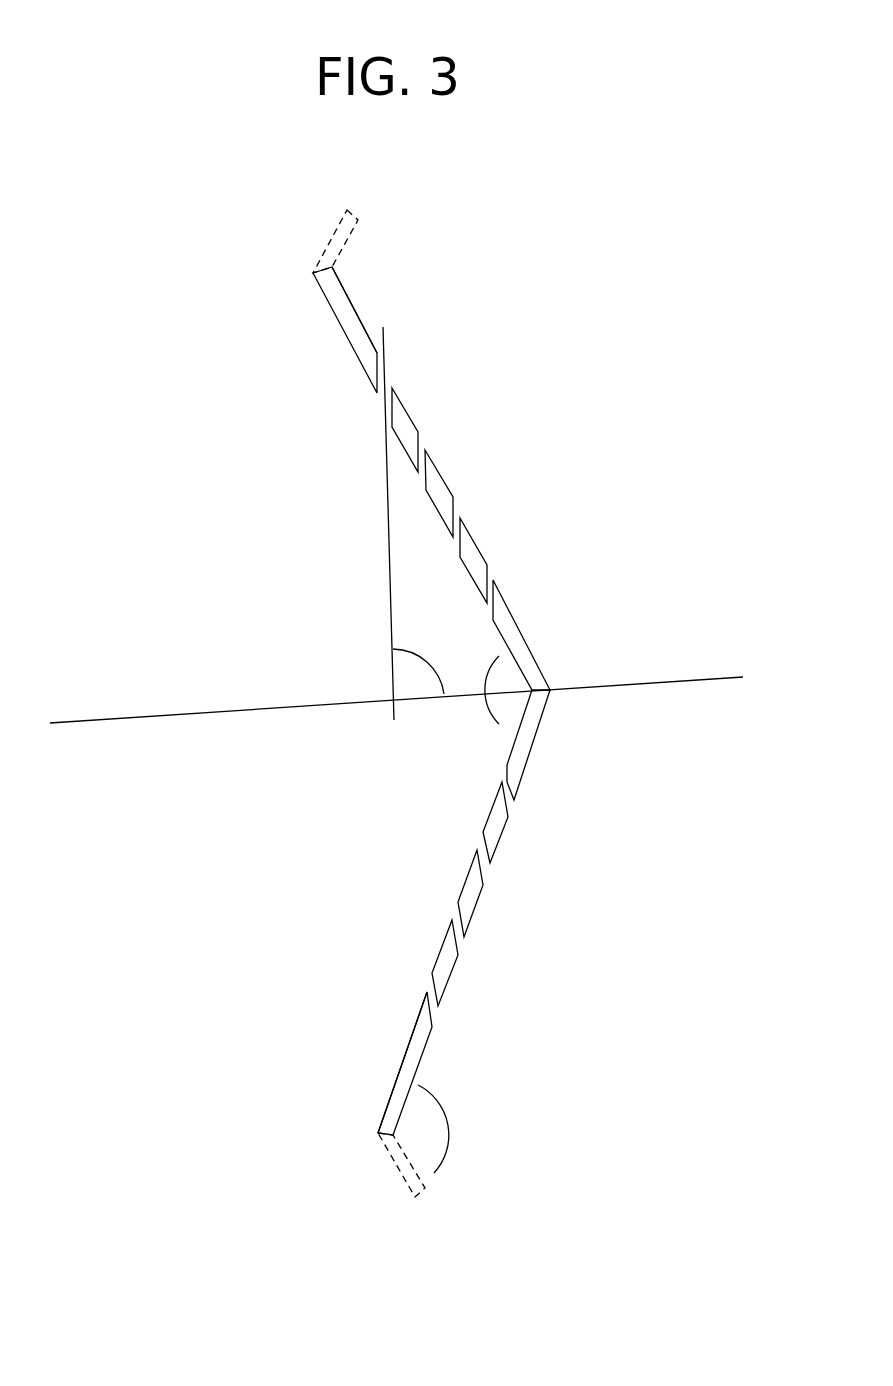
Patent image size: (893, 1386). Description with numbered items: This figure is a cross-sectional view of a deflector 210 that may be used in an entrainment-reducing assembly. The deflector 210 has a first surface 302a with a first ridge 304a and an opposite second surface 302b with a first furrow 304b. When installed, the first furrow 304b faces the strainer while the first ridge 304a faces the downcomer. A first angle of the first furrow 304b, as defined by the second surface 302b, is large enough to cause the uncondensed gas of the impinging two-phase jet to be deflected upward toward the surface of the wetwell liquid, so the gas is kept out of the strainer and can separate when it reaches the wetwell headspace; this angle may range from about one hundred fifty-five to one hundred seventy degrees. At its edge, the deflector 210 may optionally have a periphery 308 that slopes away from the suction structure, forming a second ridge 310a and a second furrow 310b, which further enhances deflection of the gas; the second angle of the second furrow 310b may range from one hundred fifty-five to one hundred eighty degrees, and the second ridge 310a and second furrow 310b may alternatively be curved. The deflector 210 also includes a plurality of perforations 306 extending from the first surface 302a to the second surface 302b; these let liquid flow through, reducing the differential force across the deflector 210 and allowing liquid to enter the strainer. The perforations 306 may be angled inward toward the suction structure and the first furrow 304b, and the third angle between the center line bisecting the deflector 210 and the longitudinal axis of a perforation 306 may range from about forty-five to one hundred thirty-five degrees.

The deflector 210 is at (128, 171).
The periphery 308 is at (347, 230).
The second ridge 310a is at (286, 280).
The second furrow 310b is at (358, 265).
The plurality of perforations 306 is at (482, 872).
The first ridge 304a is at (563, 666).
The first furrow 304b is at (482, 736).
The first surface 302a is at (425, 1050).
The second surface 302b is at (398, 1073).